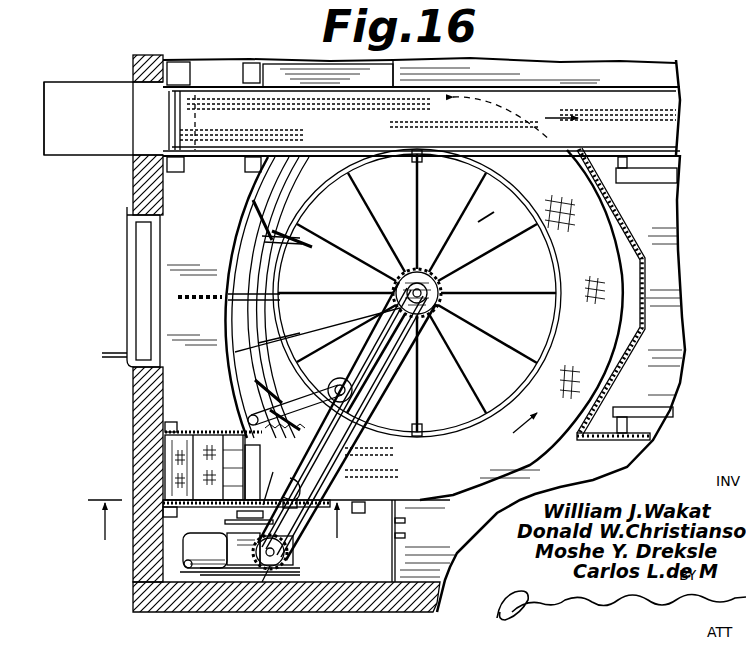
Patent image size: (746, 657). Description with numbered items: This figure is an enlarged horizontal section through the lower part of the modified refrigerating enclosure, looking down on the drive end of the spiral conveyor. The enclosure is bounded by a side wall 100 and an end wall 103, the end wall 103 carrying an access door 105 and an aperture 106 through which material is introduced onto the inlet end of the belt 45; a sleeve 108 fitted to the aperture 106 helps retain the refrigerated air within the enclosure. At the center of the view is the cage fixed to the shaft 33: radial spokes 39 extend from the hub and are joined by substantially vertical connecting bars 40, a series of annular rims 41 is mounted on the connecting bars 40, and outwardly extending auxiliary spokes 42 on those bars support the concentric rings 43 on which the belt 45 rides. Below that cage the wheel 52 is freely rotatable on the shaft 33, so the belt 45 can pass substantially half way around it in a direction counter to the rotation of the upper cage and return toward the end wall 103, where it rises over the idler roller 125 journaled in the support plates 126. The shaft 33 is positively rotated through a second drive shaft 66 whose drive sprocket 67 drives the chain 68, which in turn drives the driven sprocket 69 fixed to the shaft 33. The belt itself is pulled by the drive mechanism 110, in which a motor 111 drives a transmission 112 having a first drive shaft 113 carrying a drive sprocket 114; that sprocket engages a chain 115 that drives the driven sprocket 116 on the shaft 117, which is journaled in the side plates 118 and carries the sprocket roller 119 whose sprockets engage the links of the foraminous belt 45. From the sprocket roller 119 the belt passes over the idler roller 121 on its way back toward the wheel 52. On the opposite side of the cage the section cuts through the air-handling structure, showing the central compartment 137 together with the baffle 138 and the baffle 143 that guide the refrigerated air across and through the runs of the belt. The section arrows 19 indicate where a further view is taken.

The section line 19 is at (220, 522).
The shaft 33 is at (440, 282).
The radial spokes 39 is at (488, 268).
The connecting bars 40 is at (365, 166).
The annular rims 41 is at (310, 200).
The auxiliary spokes 42 is at (272, 244).
The concentric rings 43 is at (284, 318).
The belt 45 is at (488, 84).
The wheel 52 is at (237, 244).
The second drive shaft 66 is at (290, 550).
The drive sprocket 67 is at (264, 585).
The chain 68 is at (398, 390).
The driven sprocket 69 is at (393, 286).
The side wall 100 is at (350, 605).
The end wall 103 is at (133, 398).
The access door 105 is at (133, 284).
The aperture 106 is at (148, 85).
The sleeve 108 is at (70, 76).
The drive mechanism 110 is at (180, 571).
The motor 111 is at (185, 562).
The transmission 112 is at (300, 571).
The first drive shaft 113 is at (280, 487).
The drive sprocket 114 is at (276, 496).
The chain 115 is at (243, 536).
The driven sprocket 116 is at (225, 523).
The shaft 117 is at (237, 514).
The side plates 118 is at (218, 433).
The sprocket roller 119 is at (255, 459).
The idler roller 121 is at (192, 418).
The idler roller 125 is at (188, 165).
The support plates 126 is at (217, 82).
The central compartment 137 is at (660, 290).
The baffle 138 is at (608, 388).
The baffle 143 is at (616, 200).